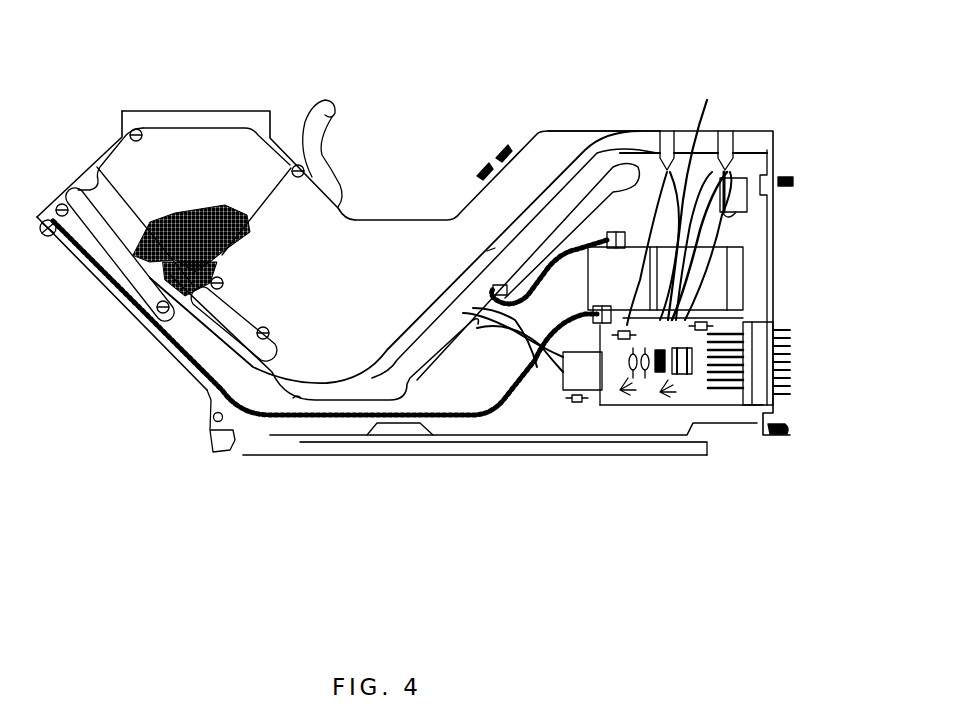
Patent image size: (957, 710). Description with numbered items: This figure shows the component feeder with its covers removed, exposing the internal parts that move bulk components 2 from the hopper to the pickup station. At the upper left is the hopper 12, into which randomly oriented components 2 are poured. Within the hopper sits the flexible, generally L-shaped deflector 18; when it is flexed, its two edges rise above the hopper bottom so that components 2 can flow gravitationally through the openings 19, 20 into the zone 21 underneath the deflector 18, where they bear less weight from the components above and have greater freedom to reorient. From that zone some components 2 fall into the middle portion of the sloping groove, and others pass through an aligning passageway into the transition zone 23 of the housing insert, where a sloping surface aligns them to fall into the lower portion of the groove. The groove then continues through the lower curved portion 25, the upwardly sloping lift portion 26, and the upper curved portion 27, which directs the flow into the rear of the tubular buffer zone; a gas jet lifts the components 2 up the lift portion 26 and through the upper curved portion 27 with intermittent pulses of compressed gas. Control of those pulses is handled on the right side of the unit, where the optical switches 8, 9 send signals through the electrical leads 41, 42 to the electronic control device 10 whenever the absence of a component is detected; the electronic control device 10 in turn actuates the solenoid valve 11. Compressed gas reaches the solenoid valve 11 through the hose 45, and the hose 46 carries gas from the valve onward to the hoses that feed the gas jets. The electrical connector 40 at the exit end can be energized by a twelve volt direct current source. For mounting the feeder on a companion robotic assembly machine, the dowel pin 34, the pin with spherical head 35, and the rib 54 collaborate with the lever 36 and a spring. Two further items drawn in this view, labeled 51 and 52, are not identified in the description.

The component 2 is at (218, 208).
The rear optical switch 8 is at (665, 128).
The forward optical switch 9 is at (727, 128).
The electronic control device 10 is at (613, 393).
The solenoid valve 11 is at (712, 292).
The hopper 12 is at (188, 198).
The deflector 18 is at (168, 232).
The opening under edge of deflector 19 is at (147, 290).
The opening under another edge of deflector 20 is at (205, 276).
The zone underneath deflector 21 is at (150, 320).
The transition zone 23 is at (213, 303).
The lower curved portion of groove 25 is at (317, 390).
The upwardly sloping lift portion of groove 26 is at (482, 290).
The upper curved portion of groove 27 is at (630, 147).
The dowel pin 34 is at (793, 175).
The pin with spherical head 35 is at (775, 436).
The lever 36 is at (335, 108).
The electrical connector 40 is at (758, 378).
The electrical lead 41 is at (708, 118).
The electrical lead 42 is at (723, 227).
The hose 45 is at (313, 395).
The hose 46 is at (574, 245).
The wires 51 is at (500, 390).
The sensor box 52 is at (553, 377).
The rib 54 is at (388, 448).